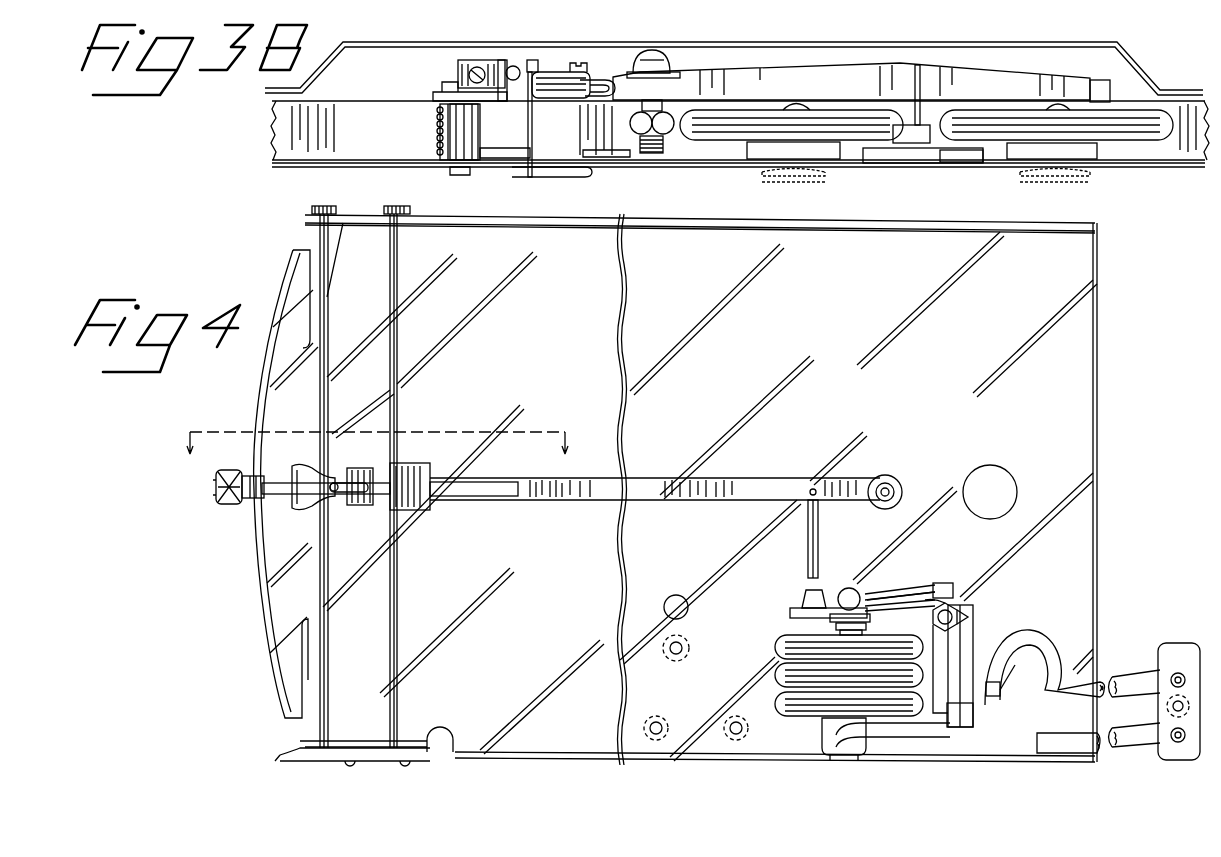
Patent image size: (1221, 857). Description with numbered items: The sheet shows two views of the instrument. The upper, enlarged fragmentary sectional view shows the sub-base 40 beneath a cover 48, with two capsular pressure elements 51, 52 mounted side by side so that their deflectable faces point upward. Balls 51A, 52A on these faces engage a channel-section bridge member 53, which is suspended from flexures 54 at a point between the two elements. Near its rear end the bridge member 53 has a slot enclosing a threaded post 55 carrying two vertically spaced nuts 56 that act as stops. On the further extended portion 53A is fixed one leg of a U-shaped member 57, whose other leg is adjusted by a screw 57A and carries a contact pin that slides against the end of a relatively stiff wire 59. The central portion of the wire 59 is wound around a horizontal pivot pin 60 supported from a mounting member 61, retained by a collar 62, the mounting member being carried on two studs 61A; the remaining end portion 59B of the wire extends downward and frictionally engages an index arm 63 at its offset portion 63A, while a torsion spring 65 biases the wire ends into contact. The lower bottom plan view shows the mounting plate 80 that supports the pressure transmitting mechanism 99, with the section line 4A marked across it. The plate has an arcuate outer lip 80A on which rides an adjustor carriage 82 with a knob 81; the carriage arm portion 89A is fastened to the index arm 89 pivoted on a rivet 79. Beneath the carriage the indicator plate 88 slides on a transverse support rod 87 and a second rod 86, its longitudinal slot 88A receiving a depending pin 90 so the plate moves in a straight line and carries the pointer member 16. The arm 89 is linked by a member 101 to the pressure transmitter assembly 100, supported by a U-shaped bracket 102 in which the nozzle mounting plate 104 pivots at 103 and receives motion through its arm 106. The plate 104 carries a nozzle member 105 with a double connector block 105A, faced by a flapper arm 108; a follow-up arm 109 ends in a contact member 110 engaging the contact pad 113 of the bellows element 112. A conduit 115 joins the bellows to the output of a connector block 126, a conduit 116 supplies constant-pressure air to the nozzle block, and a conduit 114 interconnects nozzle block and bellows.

In FIG. 3B, the cover plate 48 is at (832, 45).
In FIG. 3B, the sub-base 40 is at (1133, 168).
In FIG. 3B, the index arm 63 is at (710, 157).
In FIG. 3B, the bridge member 53 is at (861, 82).
In FIG. 3B, the extended portion of the bridge member 53A is at (616, 88).
In FIG. 3B, the U-shaped member 57 is at (556, 98).
In FIG. 3B, the screw 57A is at (586, 63).
In FIG. 3B, the threaded post 55 is at (652, 50).
In FIG. 3B, the nuts 56 is at (670, 63).
In FIG. 3B, the collar 62 is at (458, 70).
In FIG. 3B, the mounting member 61 is at (501, 60).
In FIG. 3B, the pivot pin 60 is at (517, 66).
In FIG. 3B, the wire 59 is at (534, 62).
In FIG. 3B, the end portion of the wire 59B is at (532, 150).
In FIG. 3B, the torsion spring 65 is at (438, 126).
In FIG. 3B, the studs 61A is at (462, 143).
In FIG. 3B, the offset portion of the index arm 63A is at (580, 177).
In FIG. 3B, the capsular pressure element 52 is at (863, 135).
In FIG. 3B, the ball 52A is at (798, 103).
In FIG. 3B, the capsular pressure element 51 is at (978, 133).
In FIG. 3B, the ball 51A is at (1060, 103).
In FIG. 3B, the flexures 54 is at (919, 64).
In FIG. 4, the mounting plate 80 is at (451, 490).
In FIG. 4, the outer lip portion 80A is at (290, 272).
In FIG. 4, the second support rod 86 is at (330, 288).
In FIG. 4, the transverse support rod 87 is at (398, 600).
In FIG. 4, the pressure transmitting mechanism 99 is at (1116, 305).
In FIG. 4, the section line 4A is at (369, 456).
In FIG. 4, the knob 81 is at (228, 470).
In FIG. 4, the pointer member 16 is at (232, 500).
In FIG. 4, the adjustor carriage 82 is at (473, 496).
In FIG. 4, the longitudinal slot 88A is at (345, 497).
In FIG. 4, the depending pin 90 is at (336, 480).
In FIG. 4, the indicator plate 88 is at (404, 470).
In FIG. 4, the arm portion 89A is at (500, 493).
In FIG. 4, the index arm 89 is at (523, 480).
In FIG. 4, the rivet 79 is at (880, 478).
In FIG. 4, the linkage member 101 is at (818, 518).
In FIG. 4, the arm 106 is at (793, 608).
In FIG. 4, the contact member 110 is at (846, 589).
In FIG. 4, the pressure transmitter assembly 100 is at (863, 579).
In FIG. 4, the follow-up arm 109 is at (910, 592).
In FIG. 4, the pivots 103 is at (952, 613).
In FIG. 4, the nozzle mounting plate 104 is at (974, 652).
In FIG. 4, the contact pad 113 is at (828, 618).
In FIG. 4, the bellows element 112 is at (775, 640).
In FIG. 4, the mounting bracket 102 is at (822, 750).
In FIG. 4, the flapper arm 108 is at (935, 750).
In FIG. 4, the nozzle member 105 is at (960, 728).
In FIG. 4, the double connector block 105A is at (1020, 674).
In FIG. 4, the conduit 114 is at (1035, 636).
In FIG. 4, the conduit 115 is at (1015, 752).
In FIG. 4, the conduit 116 is at (1130, 672).
In FIG. 4, the connector block 126 is at (1172, 643).